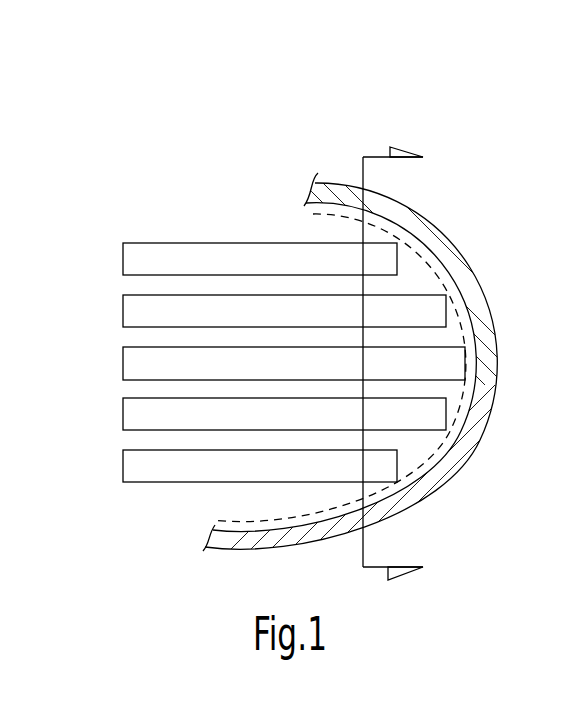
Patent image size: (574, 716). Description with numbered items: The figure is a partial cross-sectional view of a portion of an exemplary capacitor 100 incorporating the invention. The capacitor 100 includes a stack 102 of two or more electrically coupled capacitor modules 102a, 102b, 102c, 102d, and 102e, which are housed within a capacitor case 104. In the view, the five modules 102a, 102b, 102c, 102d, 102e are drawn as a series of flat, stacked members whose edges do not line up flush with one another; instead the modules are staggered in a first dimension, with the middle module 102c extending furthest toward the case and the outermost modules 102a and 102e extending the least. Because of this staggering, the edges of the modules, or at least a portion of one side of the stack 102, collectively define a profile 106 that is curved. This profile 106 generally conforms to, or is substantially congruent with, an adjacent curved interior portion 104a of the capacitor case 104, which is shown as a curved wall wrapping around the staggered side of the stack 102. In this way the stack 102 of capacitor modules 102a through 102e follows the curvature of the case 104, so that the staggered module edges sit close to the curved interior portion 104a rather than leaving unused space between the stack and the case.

The capacitor 100 is at (412, 50).
The stack 102 is at (108, 244).
The capacitor module 102a is at (260, 259).
The capacitor module 102b is at (284, 311).
The capacitor module 102c is at (294, 363).
The capacitor module 102d is at (284, 414).
The capacitor module 102e is at (260, 466).
The capacitor case 104 is at (471, 271).
The curved interior portion 104a is at (327, 203).
The profile 106 is at (457, 412).